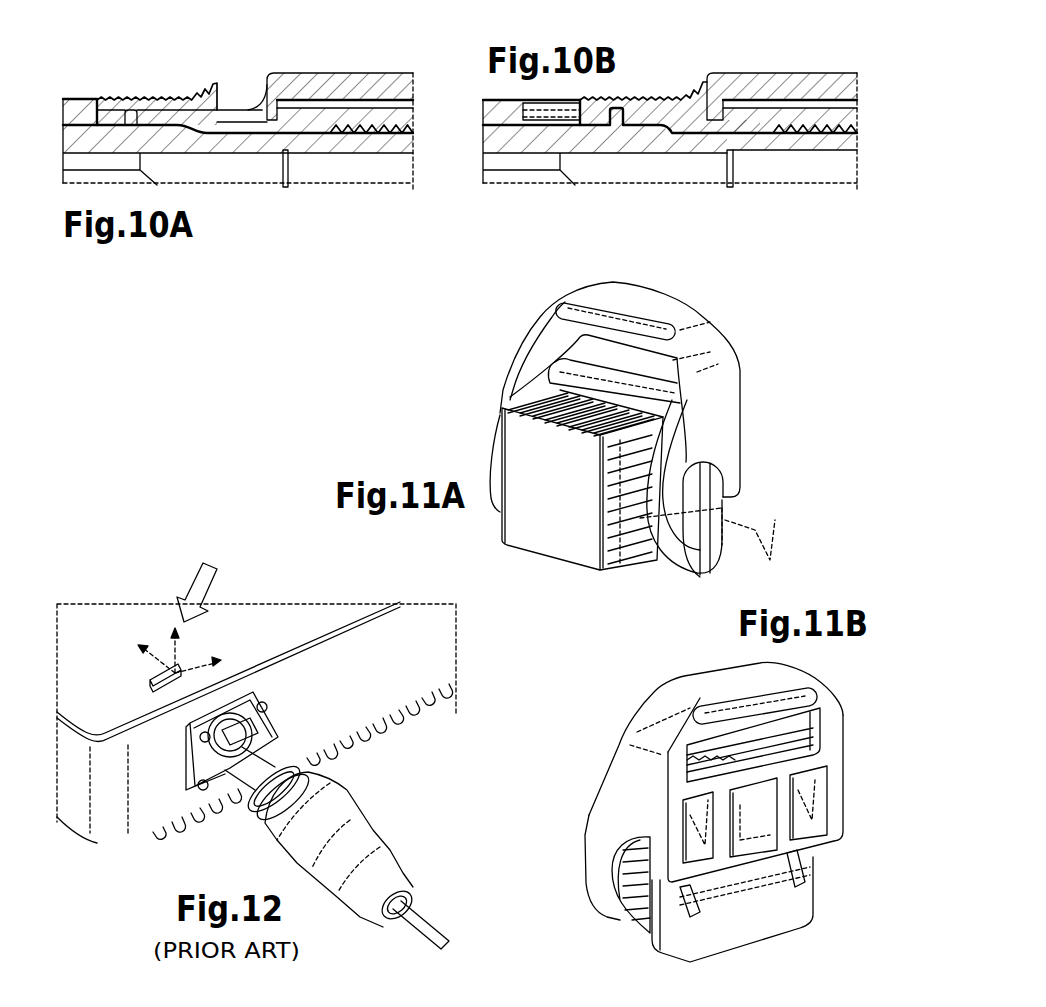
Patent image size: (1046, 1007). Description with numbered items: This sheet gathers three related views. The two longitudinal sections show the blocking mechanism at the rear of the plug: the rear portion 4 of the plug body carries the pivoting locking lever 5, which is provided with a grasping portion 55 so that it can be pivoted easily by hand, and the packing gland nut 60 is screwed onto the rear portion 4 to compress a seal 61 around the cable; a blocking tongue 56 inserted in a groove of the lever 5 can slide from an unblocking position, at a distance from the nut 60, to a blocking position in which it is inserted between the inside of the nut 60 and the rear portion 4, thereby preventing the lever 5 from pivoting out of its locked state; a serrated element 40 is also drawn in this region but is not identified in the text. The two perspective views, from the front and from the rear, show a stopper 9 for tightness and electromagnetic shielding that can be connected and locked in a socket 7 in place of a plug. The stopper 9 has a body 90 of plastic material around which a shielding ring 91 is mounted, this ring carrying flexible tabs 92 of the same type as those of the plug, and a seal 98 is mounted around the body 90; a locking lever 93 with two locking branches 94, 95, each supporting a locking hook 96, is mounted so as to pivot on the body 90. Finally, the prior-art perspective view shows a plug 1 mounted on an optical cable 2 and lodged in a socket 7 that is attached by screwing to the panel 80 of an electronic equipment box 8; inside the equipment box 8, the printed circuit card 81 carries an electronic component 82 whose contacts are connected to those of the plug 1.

In FIG. 10A, the rear portion 4 is at (73, 110).
In FIG. 10B, the rear portion 4 is at (600, 135).
In FIG. 10B, the locking lever 5 is at (498, 122).
In FIG. 10A, the blocking tongue 56 is at (160, 100).
In FIG. 10B, the blocking tongue 56 is at (673, 98).
In FIG. 10A, the grasping portion 55 is at (355, 85).
In FIG. 10B, the grasping portion 55 is at (762, 88).
In FIG. 10A, the nut 60 is at (392, 88).
In FIG. 10B, the nut 60 is at (832, 113).
In FIG. 10A, the serrations 40 is at (372, 137).
In FIG. 10B, the serrations 40 is at (776, 135).
In FIG. 10A, the seal 61 is at (395, 166).
In FIG. 10B, the seal 61 is at (820, 173).
In FIG. 11A, the stopper 9 is at (766, 343).
In FIG. 11A, the seal 98 is at (606, 373).
In FIG. 11A, the locking lever 93 is at (630, 308).
In FIG. 11B, the locking lever 93 is at (740, 703).
In FIG. 11A, the flexible tabs 92 is at (560, 392).
In FIG. 11A, the shielding ring 91 is at (520, 405).
In FIG. 11A, the body 90 is at (577, 512).
In FIG. 11B, the body 90 is at (793, 918).
In FIG. 11A, the locking branch 94 is at (718, 398).
In FIG. 11B, the locking branch 94 is at (603, 827).
In FIG. 11B, the locking branch 95 is at (817, 763).
In FIG. 11A, the locking hook 96 is at (668, 513).
In FIG. 11B, the locking hook 96 is at (597, 883).
In FIG. 12, the electronic equipment box 8 is at (128, 577).
In FIG. 12, the panel 80 is at (433, 655).
In FIG. 12, the printed circuit card 81 is at (97, 620).
In FIG. 12, the electronic component 82 is at (149, 710).
In FIG. 12, the socket 7 is at (188, 757).
In FIG. 12, the plug 1 is at (362, 833).
In FIG. 12, the optical cable 2 is at (423, 912).